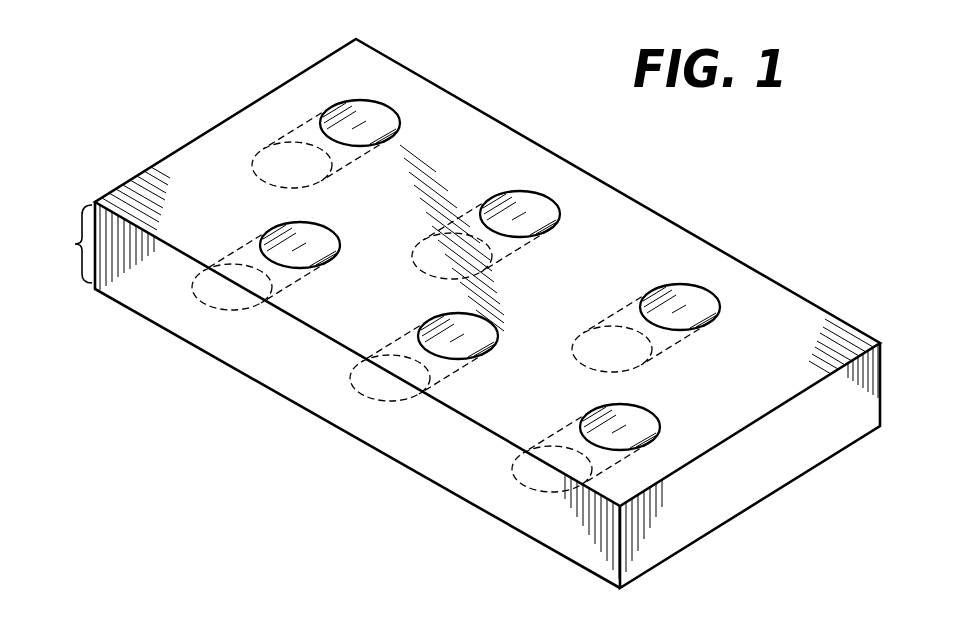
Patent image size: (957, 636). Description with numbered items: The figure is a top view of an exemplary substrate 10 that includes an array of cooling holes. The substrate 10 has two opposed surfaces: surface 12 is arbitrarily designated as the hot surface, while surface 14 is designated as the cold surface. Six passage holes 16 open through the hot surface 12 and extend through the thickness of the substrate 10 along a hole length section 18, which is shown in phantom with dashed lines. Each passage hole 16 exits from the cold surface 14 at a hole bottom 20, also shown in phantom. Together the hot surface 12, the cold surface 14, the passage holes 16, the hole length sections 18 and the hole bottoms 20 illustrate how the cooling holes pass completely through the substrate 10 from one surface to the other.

The substrate 10 is at (473, 314).
The hot surface 12 is at (797, 313).
The cold surface 14 is at (720, 528).
The passage holes 16 is at (365, 115).
The hole length section 18 is at (305, 127).
The hole bottom 20 is at (272, 152).